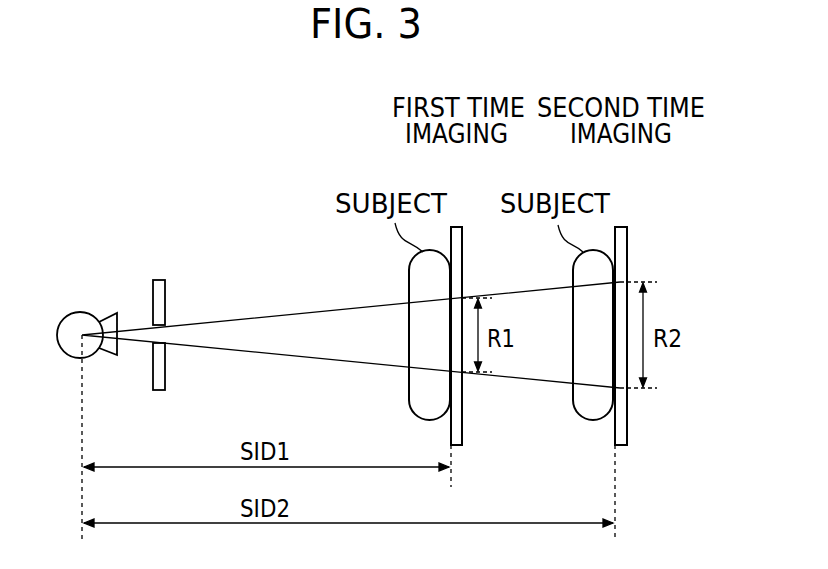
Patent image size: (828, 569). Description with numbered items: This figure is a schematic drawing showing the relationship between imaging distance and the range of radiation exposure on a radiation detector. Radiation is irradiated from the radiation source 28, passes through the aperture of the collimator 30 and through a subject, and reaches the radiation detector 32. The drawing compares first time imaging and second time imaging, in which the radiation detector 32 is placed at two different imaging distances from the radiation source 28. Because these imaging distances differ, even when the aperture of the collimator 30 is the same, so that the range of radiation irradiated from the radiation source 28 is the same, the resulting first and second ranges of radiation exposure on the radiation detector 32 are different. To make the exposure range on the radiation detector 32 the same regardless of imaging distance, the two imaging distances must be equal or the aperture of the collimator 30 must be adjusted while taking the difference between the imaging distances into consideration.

The radiation source 28 is at (80, 312).
The collimator 30 is at (155, 280).
The radiation detector 32 is at (455, 226).